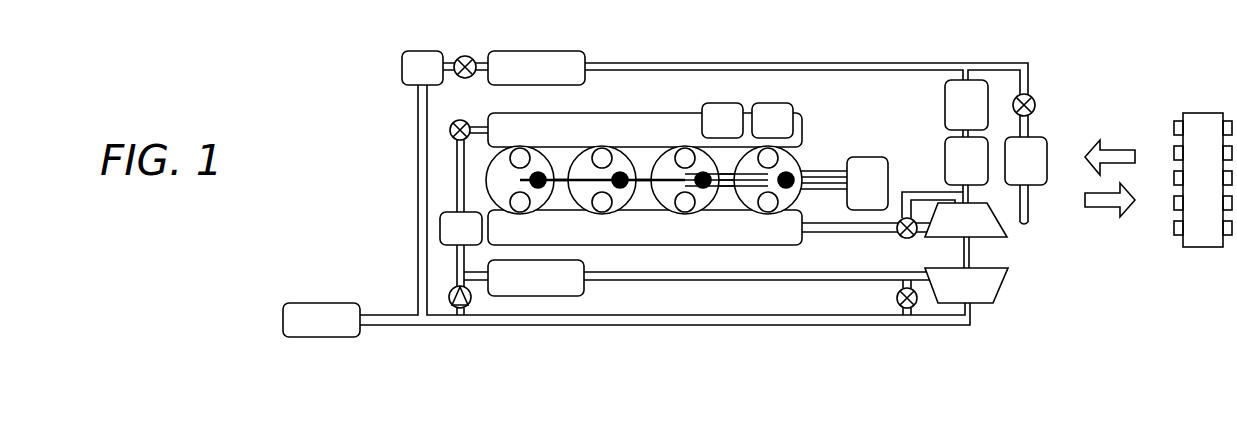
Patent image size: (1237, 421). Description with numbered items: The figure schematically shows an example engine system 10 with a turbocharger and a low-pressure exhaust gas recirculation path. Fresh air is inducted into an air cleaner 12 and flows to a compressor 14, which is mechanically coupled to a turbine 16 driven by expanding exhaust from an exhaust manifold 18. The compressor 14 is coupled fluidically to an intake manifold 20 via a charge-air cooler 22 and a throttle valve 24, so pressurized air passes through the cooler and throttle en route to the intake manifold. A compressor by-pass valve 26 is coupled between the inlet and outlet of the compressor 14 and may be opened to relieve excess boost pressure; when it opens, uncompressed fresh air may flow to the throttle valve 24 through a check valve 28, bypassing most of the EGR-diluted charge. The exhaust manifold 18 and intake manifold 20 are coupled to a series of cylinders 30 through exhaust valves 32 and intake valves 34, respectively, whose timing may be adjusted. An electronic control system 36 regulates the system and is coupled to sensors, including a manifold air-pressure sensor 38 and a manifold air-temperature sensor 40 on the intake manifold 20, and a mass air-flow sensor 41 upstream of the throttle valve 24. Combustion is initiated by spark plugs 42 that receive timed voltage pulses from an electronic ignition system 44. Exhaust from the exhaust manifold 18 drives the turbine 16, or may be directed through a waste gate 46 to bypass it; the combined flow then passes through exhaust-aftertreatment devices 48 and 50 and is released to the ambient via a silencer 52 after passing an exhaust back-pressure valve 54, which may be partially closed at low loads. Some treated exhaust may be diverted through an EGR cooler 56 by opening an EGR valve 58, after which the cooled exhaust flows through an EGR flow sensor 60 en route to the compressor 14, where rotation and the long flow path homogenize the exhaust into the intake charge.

The engine system 10 is at (289, 62).
The air cleaner 12 is at (312, 330).
The compressor 14 is at (957, 295).
The turbine 16 is at (957, 230).
The exhaust manifold 18 is at (635, 237).
The intake manifold 20 is at (635, 140).
The charge-air cooler 22 is at (527, 288).
The throttle valve 24 is at (466, 142).
The compressor by-pass valve 26 is at (900, 308).
The check valve 28 is at (454, 306).
The cylinders 30 is at (691, 195).
The exhaust valves 32 is at (768, 213).
The intake valves 34 is at (525, 148).
The electronic control system 36 is at (1194, 188).
The manifold air-pressure sensor 38 is at (713, 131).
The manifold air-temperature sensor 40 is at (763, 131).
The mass air-flow sensor 41 is at (452, 238).
The spark plugs 42 is at (540, 190).
The electronic ignition system 44 is at (858, 193).
The waste gate 46 is at (905, 238).
The exhaust-aftertreatment device 48 is at (957, 171).
The exhaust-aftertreatment device 50 is at (957, 115).
The silencer 52 is at (1017, 171).
The exhaust back-pressure valve 54 is at (1036, 100).
The EGR cooler 56 is at (527, 78).
The EGR valve 58 is at (471, 57).
The EGR flow sensor 60 is at (413, 78).